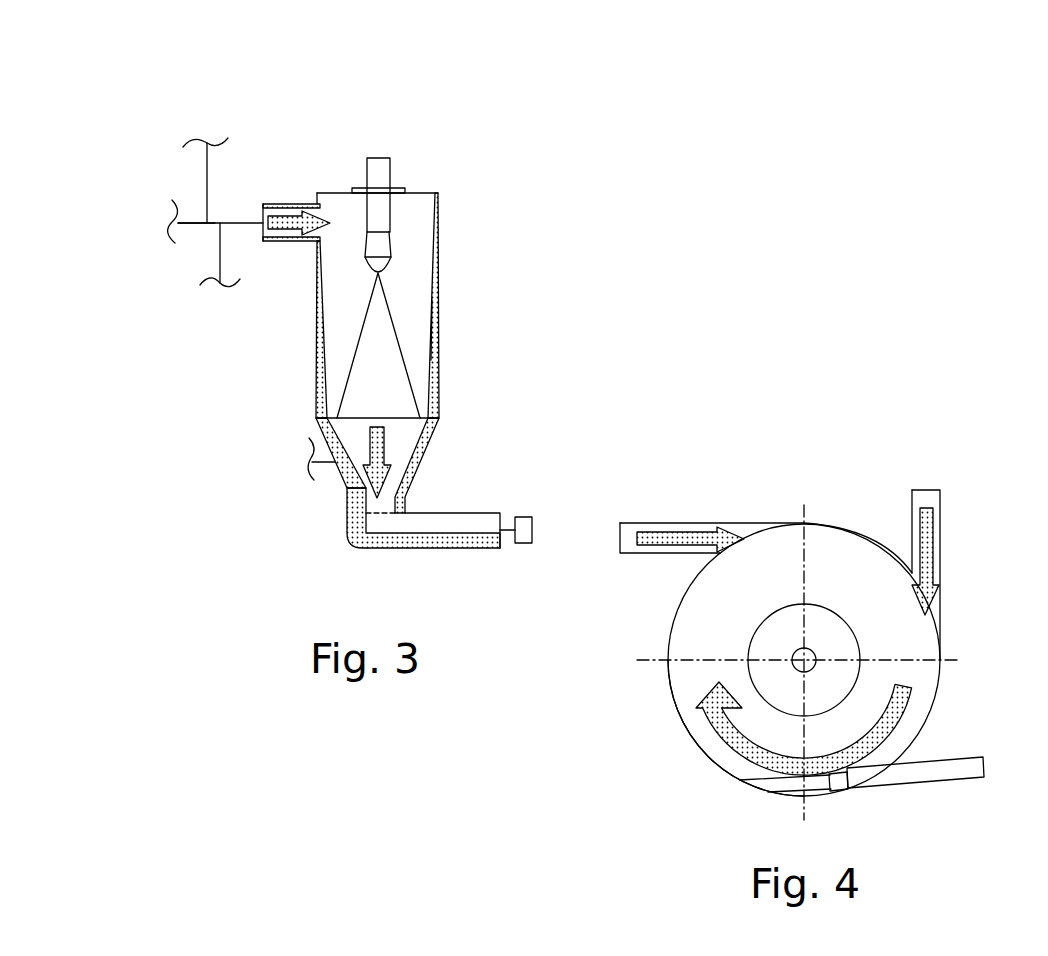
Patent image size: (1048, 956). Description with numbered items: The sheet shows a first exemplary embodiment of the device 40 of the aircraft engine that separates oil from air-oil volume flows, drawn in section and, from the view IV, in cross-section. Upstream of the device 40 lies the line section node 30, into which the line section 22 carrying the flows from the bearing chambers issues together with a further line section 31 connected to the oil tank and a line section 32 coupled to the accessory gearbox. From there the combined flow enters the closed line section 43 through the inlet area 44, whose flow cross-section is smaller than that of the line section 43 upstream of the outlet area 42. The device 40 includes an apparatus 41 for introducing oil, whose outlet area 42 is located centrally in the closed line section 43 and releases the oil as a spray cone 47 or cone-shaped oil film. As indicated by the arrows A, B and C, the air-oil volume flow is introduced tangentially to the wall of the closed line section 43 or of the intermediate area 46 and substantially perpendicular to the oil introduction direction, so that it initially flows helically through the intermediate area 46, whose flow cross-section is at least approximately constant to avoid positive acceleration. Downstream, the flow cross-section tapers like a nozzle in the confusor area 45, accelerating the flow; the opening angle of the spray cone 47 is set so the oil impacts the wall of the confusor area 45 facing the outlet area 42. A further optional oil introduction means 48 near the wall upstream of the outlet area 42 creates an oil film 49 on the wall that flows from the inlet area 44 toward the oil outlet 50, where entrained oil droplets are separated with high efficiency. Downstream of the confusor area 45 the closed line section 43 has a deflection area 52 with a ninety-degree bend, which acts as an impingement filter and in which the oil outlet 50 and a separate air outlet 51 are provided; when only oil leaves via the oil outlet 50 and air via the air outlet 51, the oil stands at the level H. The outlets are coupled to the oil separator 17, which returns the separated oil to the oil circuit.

In FIG. 3, the oil separator 17 is at (533, 530).
In FIG. 3, the line section 22 is at (205, 183).
In FIG. 3, the line section node 30 is at (218, 210).
In FIG. 3, the further line section 31 is at (197, 224).
In FIG. 3, the line section 32 is at (222, 252).
In FIG. 3, the device 40 is at (473, 176).
In FIG. 4, the device 40 is at (885, 476).
In FIG. 3, the apparatus for introducing oil 41 is at (402, 236).
In FIG. 4, the apparatus for introducing oil 41 is at (788, 656).
In FIG. 3, the outlet area 42 is at (379, 273).
In FIG. 3, the closed line section 43 is at (448, 313).
In FIG. 3, the inlet area 44 is at (330, 212).
In FIG. 4, the inlet area 44 is at (716, 554).
In FIG. 3, the confusor area 45 is at (420, 467).
In FIG. 4, the confusor area 45 is at (767, 613).
In FIG. 3, the intermediate area 46 is at (317, 355).
In FIG. 4, the intermediate area 46 is at (678, 715).
In FIG. 3, the spray cone 47 is at (340, 398).
In FIG. 4, the further oil introduction means 48 is at (877, 802).
In FIG. 3, the oil film 49 is at (440, 352).
In FIG. 3, the oil outlet 50 is at (376, 525).
In FIG. 3, the air outlet 51 is at (316, 470).
In FIG. 3, the deflection area 52 is at (340, 530).
In FIG. 3, the level H is at (388, 517).
In FIG. 3, the view IV is at (387, 150).
In FIG. 4, the arrow A is at (648, 537).
In FIG. 4, the arrow B is at (925, 540).
In FIG. 4, the arrow C is at (907, 717).